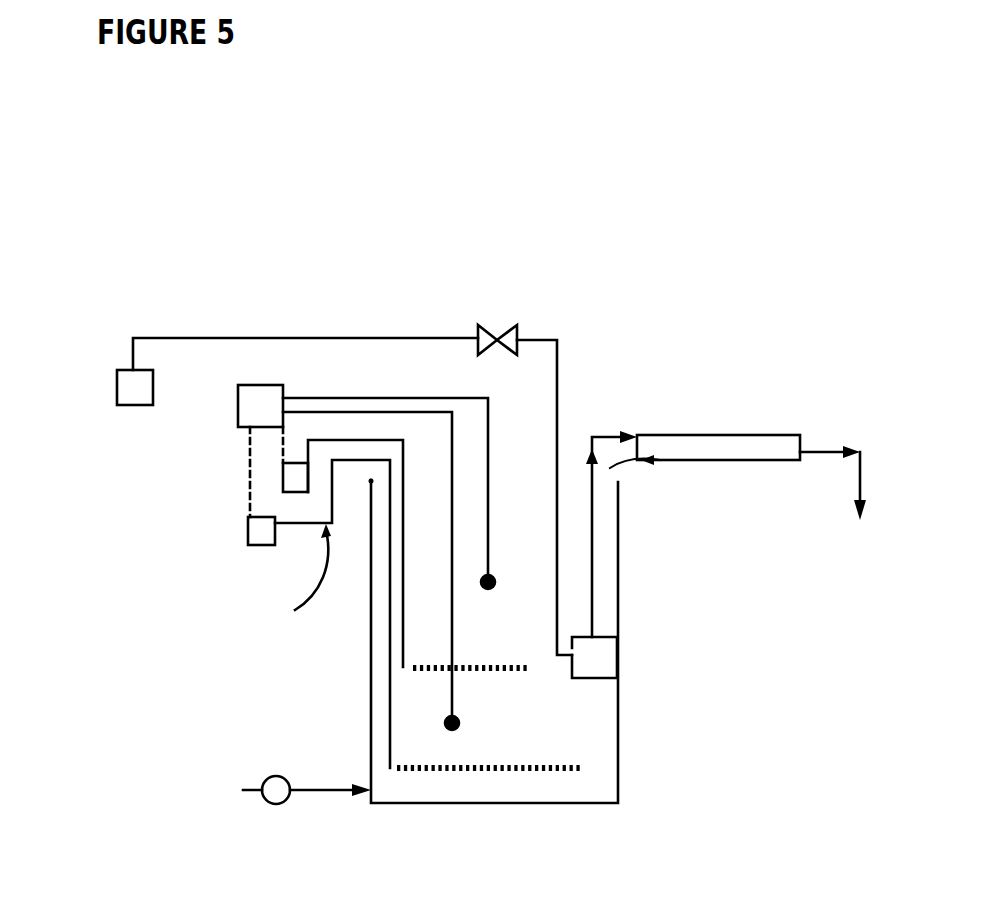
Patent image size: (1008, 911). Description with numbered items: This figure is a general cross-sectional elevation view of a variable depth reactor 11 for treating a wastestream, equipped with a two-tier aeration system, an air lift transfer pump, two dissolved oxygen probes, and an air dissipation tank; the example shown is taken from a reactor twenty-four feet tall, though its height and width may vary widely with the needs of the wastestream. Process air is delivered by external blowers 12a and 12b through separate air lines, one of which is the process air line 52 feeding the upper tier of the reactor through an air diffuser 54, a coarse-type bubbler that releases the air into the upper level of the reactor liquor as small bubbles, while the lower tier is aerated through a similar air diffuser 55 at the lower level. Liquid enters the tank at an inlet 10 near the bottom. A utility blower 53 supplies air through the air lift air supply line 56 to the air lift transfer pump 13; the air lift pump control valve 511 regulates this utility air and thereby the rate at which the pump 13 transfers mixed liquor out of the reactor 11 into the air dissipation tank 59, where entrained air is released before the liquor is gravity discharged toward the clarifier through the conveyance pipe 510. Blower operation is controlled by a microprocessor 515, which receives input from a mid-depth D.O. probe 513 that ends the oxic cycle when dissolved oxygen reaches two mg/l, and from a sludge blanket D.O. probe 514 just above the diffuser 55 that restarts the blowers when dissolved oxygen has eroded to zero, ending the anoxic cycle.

The pump / water inlet 10 is at (282, 816).
The variable depth reactor 11 is at (526, 814).
The external blower 12a is at (235, 538).
The external blower 12b is at (270, 481).
The air lift transfer pump 13 is at (611, 655).
The process air line 52 is at (340, 430).
The utility blower 53 is at (105, 390).
The air diffuser 54 is at (414, 680).
The air diffuser 55 is at (557, 760).
The air lift air supply line 56 is at (570, 368).
The air dissipation tank 59 is at (730, 436).
The conveyance pipe 510 is at (876, 473).
The air lift pump control valve 511 is at (502, 325).
The mid-depth D.O. probe 513 is at (503, 572).
The sludge blanket D.O. probe 514 is at (442, 742).
The microprocessor 515 is at (225, 407).